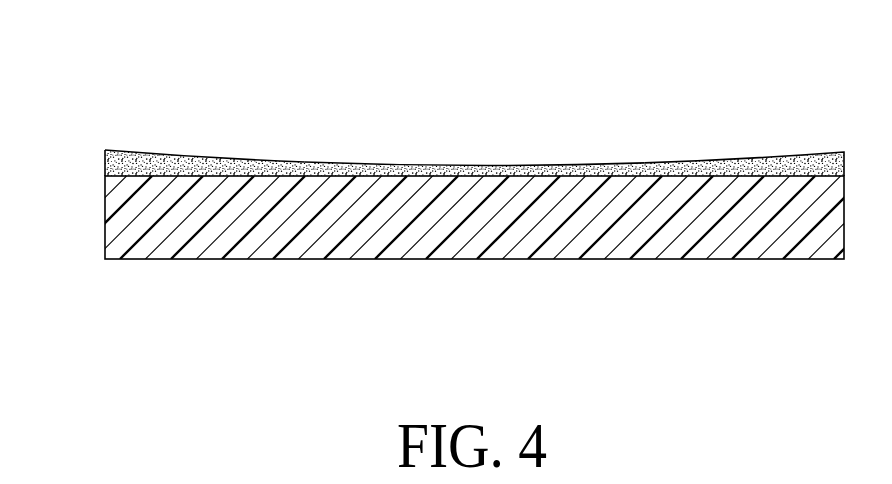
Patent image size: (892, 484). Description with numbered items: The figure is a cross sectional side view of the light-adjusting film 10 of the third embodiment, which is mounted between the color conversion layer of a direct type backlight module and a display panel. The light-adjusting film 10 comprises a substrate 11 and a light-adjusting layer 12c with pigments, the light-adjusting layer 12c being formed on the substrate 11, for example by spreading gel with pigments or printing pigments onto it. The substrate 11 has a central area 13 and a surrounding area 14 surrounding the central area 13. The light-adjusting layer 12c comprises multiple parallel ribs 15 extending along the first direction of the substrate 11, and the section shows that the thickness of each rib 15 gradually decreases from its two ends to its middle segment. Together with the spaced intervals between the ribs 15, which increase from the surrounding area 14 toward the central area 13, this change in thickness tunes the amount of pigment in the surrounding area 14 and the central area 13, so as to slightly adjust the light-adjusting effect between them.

The light-adjusting film 10 is at (107, 118).
The substrate 11 is at (122, 222).
The light-adjusting layer 12c is at (738, 160).
The central area 13 is at (453, 162).
The surrounding area 14 is at (150, 147).
The rib 15 is at (197, 163).